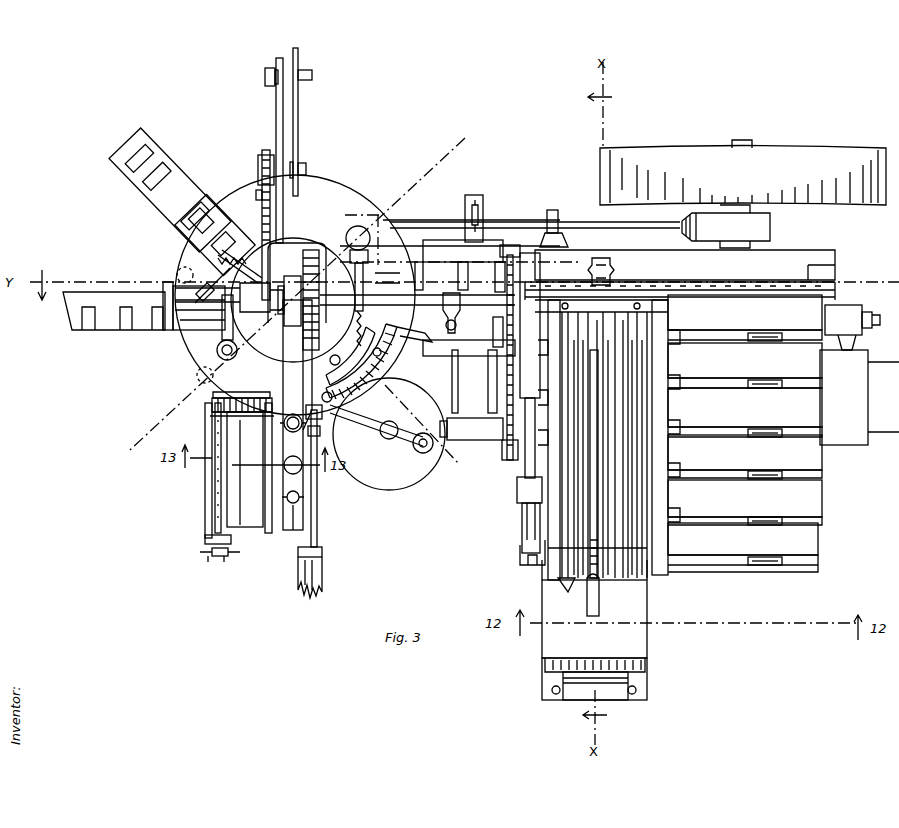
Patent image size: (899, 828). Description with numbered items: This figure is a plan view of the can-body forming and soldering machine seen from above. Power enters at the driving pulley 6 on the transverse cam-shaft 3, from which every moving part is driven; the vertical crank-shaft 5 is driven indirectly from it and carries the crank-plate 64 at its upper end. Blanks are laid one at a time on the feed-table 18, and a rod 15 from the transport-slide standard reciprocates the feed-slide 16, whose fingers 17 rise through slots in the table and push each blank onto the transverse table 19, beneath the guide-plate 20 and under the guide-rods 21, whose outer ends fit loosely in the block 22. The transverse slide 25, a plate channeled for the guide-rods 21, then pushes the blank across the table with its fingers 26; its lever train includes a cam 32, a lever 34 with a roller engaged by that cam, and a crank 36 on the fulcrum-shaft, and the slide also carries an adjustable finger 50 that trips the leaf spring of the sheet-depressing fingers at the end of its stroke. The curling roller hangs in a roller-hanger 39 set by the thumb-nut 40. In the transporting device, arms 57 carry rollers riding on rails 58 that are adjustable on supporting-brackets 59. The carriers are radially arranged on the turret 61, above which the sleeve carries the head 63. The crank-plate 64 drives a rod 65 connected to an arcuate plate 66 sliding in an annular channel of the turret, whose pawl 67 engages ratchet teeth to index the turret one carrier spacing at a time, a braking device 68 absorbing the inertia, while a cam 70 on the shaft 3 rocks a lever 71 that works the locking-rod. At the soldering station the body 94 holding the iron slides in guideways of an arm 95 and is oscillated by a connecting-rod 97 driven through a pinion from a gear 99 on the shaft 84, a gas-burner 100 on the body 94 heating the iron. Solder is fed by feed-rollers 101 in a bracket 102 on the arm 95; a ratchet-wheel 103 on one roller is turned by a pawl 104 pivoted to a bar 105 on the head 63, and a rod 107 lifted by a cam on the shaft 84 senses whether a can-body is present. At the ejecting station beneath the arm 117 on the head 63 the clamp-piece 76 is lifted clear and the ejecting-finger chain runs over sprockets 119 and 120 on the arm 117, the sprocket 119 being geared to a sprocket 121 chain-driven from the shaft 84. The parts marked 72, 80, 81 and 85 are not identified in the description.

The transverse cam-shaft 3 is at (740, 142).
The vertical crank-shaft 5 is at (388, 432).
The driving pulley 6 is at (743, 176).
The rod 15 is at (873, 313).
The feed-slide 16 is at (859, 397).
The feed-fingers 17 is at (774, 343).
The feed-table 18 is at (745, 433).
The transverse table 19 is at (633, 408).
The guide-plate 20 is at (660, 455).
The guide-rods 21 is at (618, 515).
The block 22 is at (646, 672).
The transverse slide 25 is at (594, 603).
The fingers 26 is at (577, 595).
The cam 32 is at (520, 470).
The lever 34 is at (522, 515).
The crank 36 is at (522, 545).
The roller-hanger 39 is at (622, 293).
The thumb-nut 40 is at (608, 265).
The adjustable finger 50 is at (595, 548).
The arms 57 is at (493, 330).
The rails 58 is at (465, 298).
The supporting-brackets 59 is at (471, 317).
The turret 61 is at (295, 295).
The head 63 is at (250, 283).
The crank-plate 64 is at (389, 434).
The rod 65 is at (355, 418).
The arcuate plate 66 is at (348, 364).
The pawl 67 is at (398, 353).
The braking device 68 is at (290, 301).
The cam 70 is at (752, 245).
The lever 71 is at (517, 214).
The carriage 72 is at (212, 277).
The clamp-piece 76 is at (147, 229).
The block 80 is at (359, 297).
The roller 81 is at (358, 238).
The shaft 84 is at (417, 290).
The rack 85 is at (510, 455).
The body 94 is at (294, 522).
The arm 95 is at (270, 558).
The connecting-rod 97 is at (317, 482).
The gear 99 is at (319, 262).
The gas-burner 100 is at (319, 546).
The feed-rollers 101 is at (230, 460).
The bracket 102 is at (260, 535).
The ratchet-wheel 103 is at (213, 417).
The pawl 104 is at (212, 403).
The bar 105 is at (230, 397).
The rod 107 is at (443, 326).
The arm 117 is at (282, 90).
The sprocket 119 is at (305, 170).
The sprocket 120 is at (298, 63).
The sprocket 121 is at (262, 183).